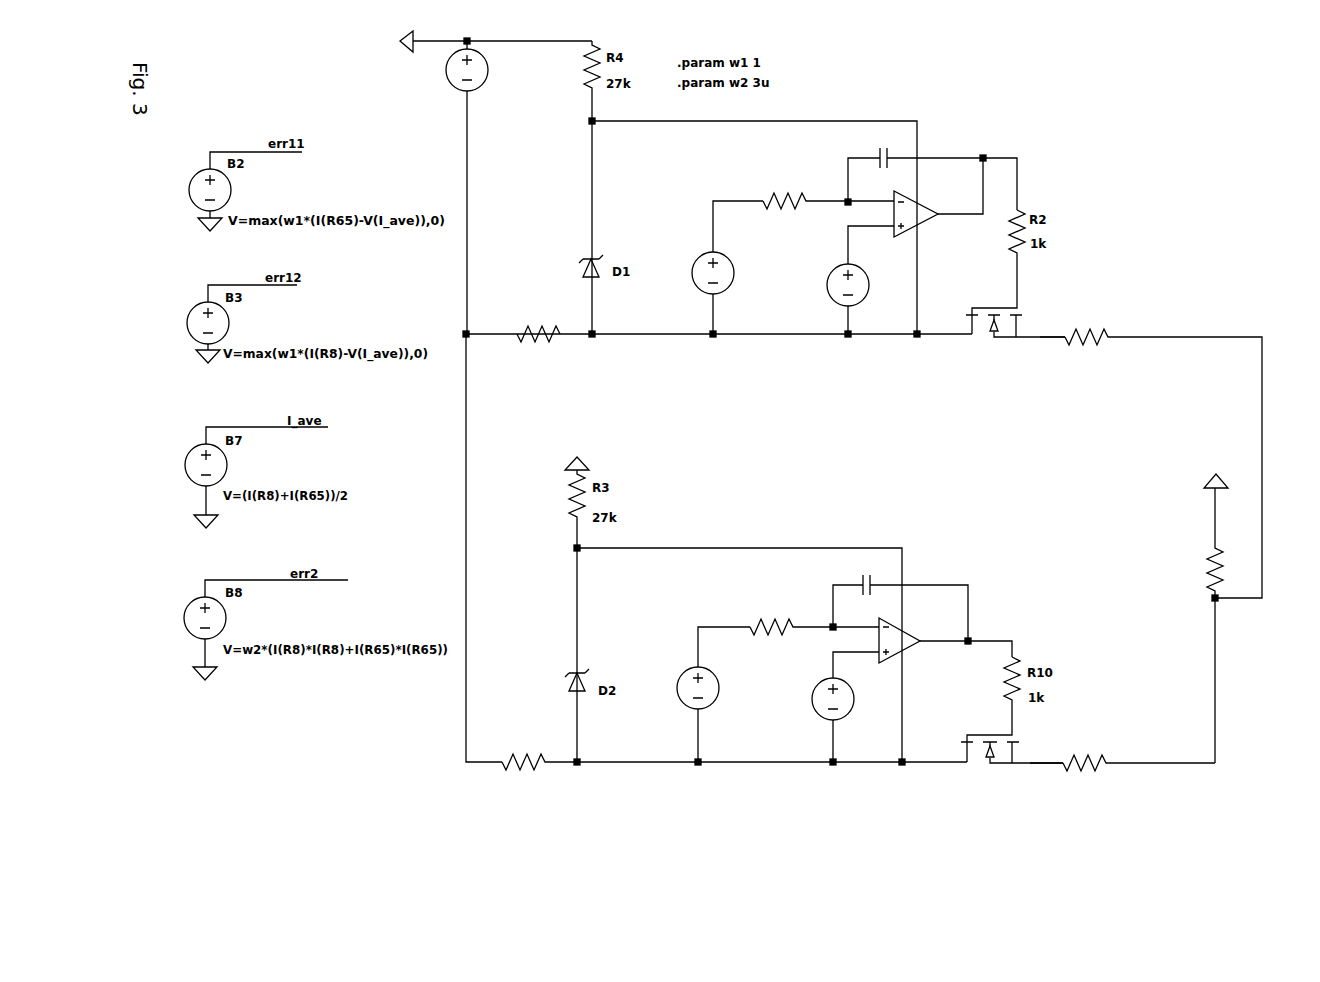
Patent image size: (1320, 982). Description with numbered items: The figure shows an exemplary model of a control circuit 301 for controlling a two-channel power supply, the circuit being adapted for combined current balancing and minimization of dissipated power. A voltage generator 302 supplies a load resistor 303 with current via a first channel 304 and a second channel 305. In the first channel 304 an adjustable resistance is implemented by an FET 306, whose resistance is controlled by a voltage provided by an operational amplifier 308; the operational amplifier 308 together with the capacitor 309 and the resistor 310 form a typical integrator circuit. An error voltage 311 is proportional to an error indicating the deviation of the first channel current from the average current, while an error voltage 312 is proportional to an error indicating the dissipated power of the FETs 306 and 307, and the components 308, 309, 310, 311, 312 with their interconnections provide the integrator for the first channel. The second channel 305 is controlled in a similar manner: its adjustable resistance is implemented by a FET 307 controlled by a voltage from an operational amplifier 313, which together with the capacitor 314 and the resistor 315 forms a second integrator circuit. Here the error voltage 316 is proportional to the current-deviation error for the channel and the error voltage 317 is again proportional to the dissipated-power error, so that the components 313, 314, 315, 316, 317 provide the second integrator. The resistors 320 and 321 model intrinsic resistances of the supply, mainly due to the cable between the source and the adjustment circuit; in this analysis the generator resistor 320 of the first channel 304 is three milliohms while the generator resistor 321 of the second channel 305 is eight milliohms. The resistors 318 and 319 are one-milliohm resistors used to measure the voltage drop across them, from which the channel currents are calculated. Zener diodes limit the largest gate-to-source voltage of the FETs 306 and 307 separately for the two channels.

The current balancing circuit with Pd min 301 is at (1119, 175).
The voltage generator 302 is at (489, 74).
The load resistor 303 is at (1197, 537).
The first channel 304 is at (1050, 339).
The second channel 305 is at (1042, 763).
The FET 306 is at (983, 338).
The FET 307 is at (980, 733).
The operational amplifier 308 is at (928, 215).
The capacitor 309 is at (865, 143).
The resistor 310 is at (770, 180).
The error voltage 311 is at (692, 262).
The error voltage 312 is at (837, 302).
The operational amplifier 313 is at (918, 643).
The capacitor 314 is at (852, 573).
The resistor 315 is at (753, 608).
The error voltage 316 is at (684, 682).
The error voltage 317 is at (820, 719).
The resistor 318 is at (1110, 328).
The resistor 319 is at (1102, 757).
The generator resistor 320 is at (558, 343).
The generator resistor 321 is at (537, 720).